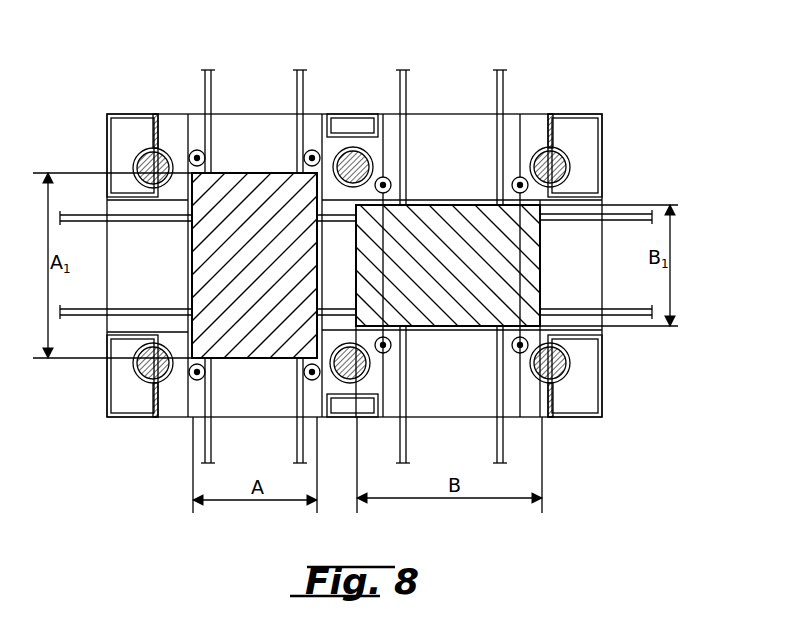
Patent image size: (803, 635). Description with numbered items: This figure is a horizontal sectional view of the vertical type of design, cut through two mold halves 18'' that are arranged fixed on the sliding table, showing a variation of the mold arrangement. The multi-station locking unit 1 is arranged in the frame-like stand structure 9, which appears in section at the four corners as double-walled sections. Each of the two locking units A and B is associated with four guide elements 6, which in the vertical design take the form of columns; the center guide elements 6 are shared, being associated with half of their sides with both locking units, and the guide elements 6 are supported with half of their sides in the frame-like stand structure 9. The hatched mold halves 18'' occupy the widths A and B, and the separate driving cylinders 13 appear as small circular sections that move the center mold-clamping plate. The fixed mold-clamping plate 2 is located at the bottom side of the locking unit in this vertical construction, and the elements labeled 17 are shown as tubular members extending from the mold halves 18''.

The multi-station locking unit 1 is at (352, 72).
The fixed mold-clamping plate 2 is at (433, 122).
The guide elements 6 is at (164, 149).
The frame-like stand structure 9 is at (126, 125).
The driving cylinders 13 is at (305, 152).
The conductor tubes 17 is at (297, 74).
The mold half 18'' is at (329, 265).